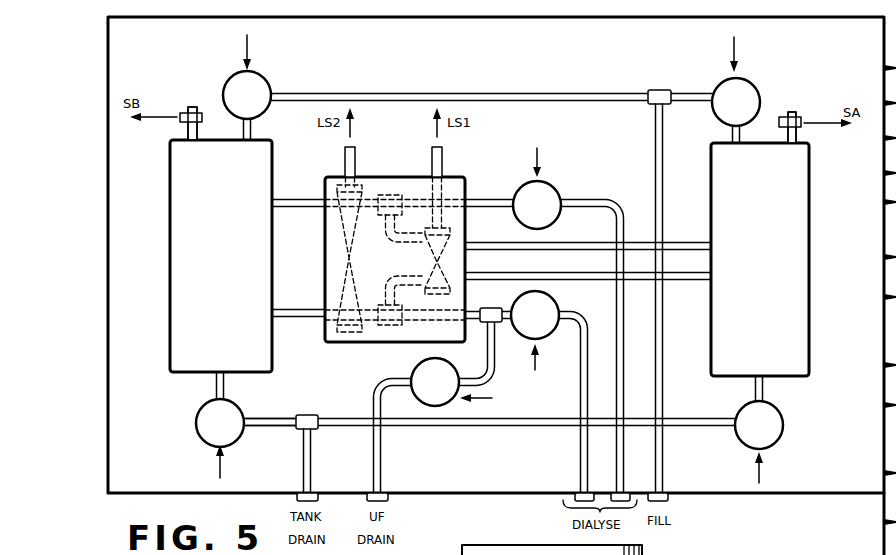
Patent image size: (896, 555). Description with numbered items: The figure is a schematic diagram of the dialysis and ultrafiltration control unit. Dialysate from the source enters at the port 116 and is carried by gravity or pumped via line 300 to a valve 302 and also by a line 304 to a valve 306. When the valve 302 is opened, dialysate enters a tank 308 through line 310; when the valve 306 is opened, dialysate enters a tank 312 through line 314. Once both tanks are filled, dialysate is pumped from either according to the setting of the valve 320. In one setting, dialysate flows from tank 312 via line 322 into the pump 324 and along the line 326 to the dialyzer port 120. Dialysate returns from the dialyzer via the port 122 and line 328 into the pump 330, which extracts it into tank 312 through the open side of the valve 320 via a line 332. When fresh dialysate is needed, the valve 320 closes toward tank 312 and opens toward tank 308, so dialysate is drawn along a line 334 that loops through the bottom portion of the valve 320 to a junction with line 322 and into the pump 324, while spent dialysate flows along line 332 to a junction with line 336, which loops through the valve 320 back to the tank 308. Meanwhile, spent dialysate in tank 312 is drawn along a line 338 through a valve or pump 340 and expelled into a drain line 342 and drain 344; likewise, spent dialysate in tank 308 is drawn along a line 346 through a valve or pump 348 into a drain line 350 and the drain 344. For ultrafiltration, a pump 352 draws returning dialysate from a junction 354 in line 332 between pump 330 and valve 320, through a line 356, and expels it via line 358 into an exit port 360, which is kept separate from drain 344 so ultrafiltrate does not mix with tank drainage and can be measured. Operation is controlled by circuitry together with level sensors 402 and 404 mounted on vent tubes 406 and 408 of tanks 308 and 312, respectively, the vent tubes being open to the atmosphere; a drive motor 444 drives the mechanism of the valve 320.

The port 116 is at (664, 493).
The dialyzer port 120 is at (628, 494).
The port 122 is at (576, 494).
The line 300 is at (655, 162).
The valve 302 is at (721, 83).
The line 304 is at (478, 93).
The valve 306 is at (261, 76).
The tank 308 is at (810, 312).
The line 310 is at (731, 133).
The tank 312 is at (170, 273).
The line 314 is at (254, 130).
The valve 320 is at (390, 176).
The line 322 is at (300, 198).
The pump 324 is at (553, 188).
The line 326 is at (616, 236).
The line 328 is at (580, 457).
The pump 330 is at (557, 305).
The line 332 is at (300, 318).
The line 334 is at (518, 245).
The line 336 is at (575, 275).
The line 338 is at (215, 388).
The valve or pump 340 is at (203, 436).
The drain line 342 is at (273, 426).
The drain 344 is at (299, 498).
The line 346 is at (765, 390).
The valve or pump 348 is at (782, 433).
The drain line 350 is at (477, 426).
The pump 352 is at (414, 371).
The junction 354 is at (491, 308).
The line 356 is at (500, 358).
The line 358 is at (384, 456).
The exit port 360 is at (391, 501).
The level sensor 402 is at (795, 117).
The level sensor 404 is at (187, 112).
The vent tube 406 is at (797, 135).
The vent tube 408 is at (181, 126).
The drive motor 444 is at (650, 554).